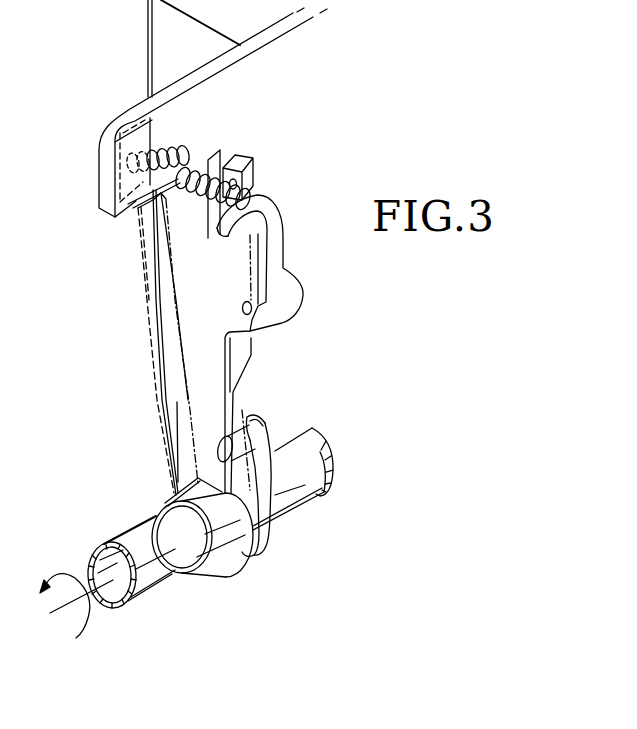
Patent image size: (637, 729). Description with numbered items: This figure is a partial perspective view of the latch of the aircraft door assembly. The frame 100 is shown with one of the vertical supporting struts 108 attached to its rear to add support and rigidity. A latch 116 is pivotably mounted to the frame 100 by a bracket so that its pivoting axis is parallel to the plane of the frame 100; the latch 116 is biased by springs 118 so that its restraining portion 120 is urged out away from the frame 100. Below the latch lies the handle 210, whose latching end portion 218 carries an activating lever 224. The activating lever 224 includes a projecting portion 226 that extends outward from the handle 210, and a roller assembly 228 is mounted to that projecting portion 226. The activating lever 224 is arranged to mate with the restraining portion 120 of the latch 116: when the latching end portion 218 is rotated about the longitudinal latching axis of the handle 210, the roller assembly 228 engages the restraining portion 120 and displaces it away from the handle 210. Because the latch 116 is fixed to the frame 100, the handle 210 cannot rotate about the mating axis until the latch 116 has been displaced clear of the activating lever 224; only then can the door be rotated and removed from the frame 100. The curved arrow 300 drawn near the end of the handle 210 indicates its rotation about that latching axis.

The frame 100 is at (120, 70).
The vertical supporting struts 108 is at (208, 31).
The latch 116 is at (152, 333).
The springs 118 is at (125, 217).
The restraining portion 120 is at (167, 442).
The handle 210 is at (170, 580).
The latching end portion 218 is at (308, 448).
The activating lever 224 is at (230, 557).
The projecting portion 226 is at (273, 497).
The roller assembly 228 is at (255, 422).
The rotation direction 300 is at (93, 623).